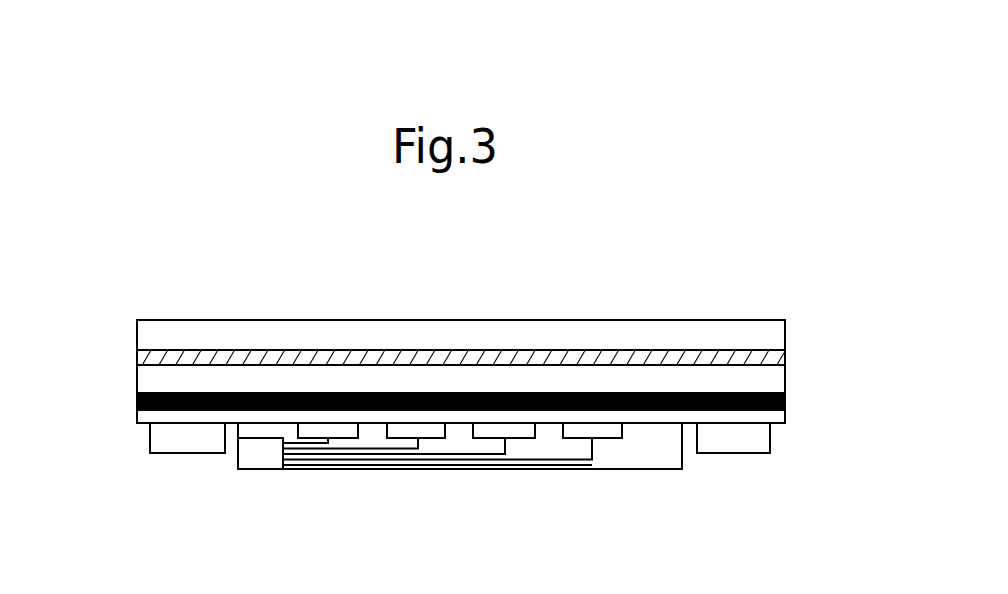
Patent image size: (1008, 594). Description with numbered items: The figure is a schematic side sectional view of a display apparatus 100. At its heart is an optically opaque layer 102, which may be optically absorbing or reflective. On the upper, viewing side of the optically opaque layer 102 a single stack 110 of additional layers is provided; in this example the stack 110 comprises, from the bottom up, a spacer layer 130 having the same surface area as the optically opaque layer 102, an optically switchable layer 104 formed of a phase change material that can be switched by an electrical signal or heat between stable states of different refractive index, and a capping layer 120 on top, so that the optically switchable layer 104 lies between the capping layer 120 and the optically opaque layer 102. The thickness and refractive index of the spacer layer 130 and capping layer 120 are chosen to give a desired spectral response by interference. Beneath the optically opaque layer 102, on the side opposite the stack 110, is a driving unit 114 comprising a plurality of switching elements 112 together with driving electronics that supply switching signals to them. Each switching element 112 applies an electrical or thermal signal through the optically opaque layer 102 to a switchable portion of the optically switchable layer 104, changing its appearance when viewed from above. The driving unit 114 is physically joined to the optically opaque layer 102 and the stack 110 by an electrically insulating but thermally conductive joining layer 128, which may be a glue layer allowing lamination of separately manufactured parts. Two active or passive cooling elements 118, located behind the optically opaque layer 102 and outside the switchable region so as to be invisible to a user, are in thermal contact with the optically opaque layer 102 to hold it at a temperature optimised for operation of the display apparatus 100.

The display apparatus 100 is at (248, 286).
The stack of additional layers 110 is at (122, 320).
The capping layer 120 is at (674, 331).
The optically switchable layer 104 is at (785, 353).
The spacer layer 130 is at (568, 378).
The optically opaque layer 102 is at (785, 400).
The electrically insulating joining layer 128 is at (147, 415).
The cooling elements 118 is at (190, 443).
The switching elements 112 is at (347, 430).
The driving unit 114 is at (271, 481).